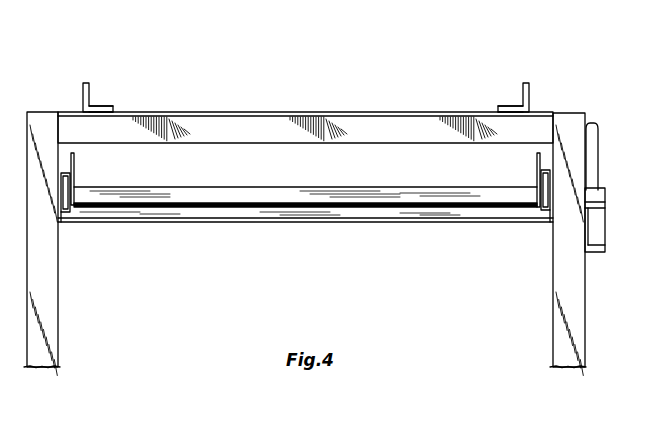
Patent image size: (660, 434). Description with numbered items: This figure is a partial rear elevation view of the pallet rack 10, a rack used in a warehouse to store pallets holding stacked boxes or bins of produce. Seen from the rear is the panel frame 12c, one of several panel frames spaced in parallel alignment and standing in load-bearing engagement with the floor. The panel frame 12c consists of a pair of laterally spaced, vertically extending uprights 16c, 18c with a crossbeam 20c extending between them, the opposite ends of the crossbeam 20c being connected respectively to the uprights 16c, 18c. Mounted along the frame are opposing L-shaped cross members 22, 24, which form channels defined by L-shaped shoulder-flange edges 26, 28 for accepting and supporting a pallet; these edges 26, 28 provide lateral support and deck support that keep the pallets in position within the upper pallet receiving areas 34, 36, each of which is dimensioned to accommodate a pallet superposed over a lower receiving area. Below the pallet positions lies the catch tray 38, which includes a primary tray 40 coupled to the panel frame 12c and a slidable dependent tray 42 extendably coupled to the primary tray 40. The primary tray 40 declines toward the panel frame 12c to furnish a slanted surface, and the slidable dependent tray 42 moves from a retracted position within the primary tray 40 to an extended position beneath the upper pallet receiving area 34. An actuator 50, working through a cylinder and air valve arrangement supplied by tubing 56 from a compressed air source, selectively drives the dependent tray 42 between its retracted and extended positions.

The pallet rack 10 is at (339, 98).
The panel frame 12c is at (61, 329).
The upright 16c is at (553, 277).
The upright 18c is at (58, 277).
The crossbeam 20c is at (395, 144).
The L-shaped cross member 22 is at (526, 82).
The L-shaped cross member 24 is at (86, 82).
The L-shaped shoulder-flange edge 26 is at (508, 105).
The L-shaped shoulder-flange edge 28 is at (104, 105).
The upper pallet receiving area 34 is at (494, 101).
The upper pallet receiving area 36 is at (118, 103).
The catch tray 38 is at (174, 230).
The primary tray 40 is at (377, 222).
The slidable dependent tray 42 is at (236, 186).
The actuator 50 is at (602, 250).
The tubing 56 is at (592, 147).